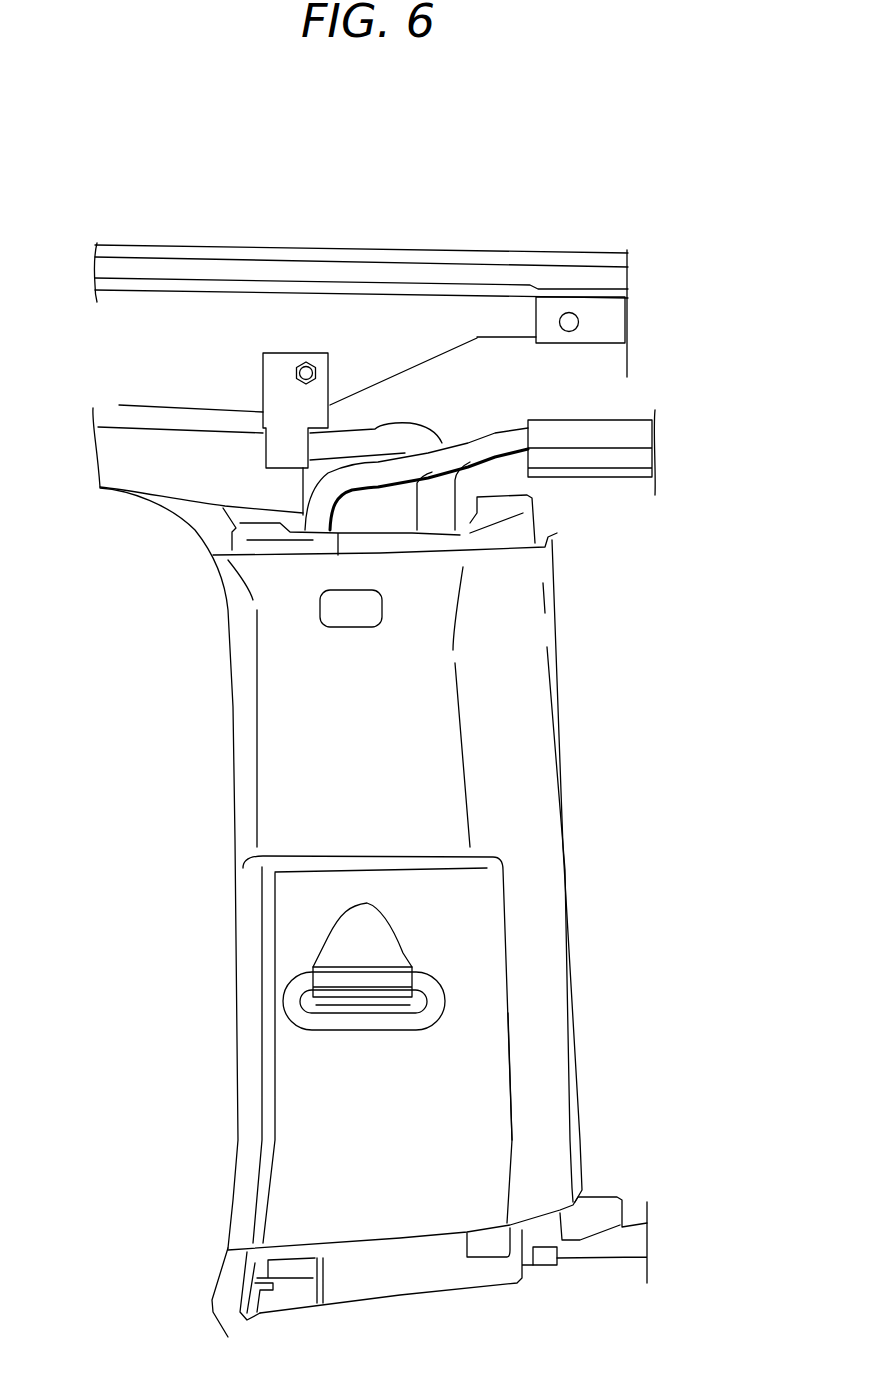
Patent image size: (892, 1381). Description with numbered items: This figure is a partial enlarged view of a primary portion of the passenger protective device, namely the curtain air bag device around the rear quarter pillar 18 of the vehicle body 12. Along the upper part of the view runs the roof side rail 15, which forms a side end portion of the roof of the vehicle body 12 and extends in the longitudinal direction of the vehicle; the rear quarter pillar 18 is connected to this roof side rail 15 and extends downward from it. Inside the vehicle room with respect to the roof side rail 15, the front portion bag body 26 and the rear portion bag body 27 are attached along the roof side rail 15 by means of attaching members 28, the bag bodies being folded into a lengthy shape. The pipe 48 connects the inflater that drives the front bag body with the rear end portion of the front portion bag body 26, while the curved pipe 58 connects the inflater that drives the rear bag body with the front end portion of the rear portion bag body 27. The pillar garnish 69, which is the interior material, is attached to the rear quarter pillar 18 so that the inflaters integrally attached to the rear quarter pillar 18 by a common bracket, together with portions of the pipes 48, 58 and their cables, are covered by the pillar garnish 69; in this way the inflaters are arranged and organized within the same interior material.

The vehicle body 12 is at (361, 272).
The roof side rail 15 is at (196, 245).
The rear quarter pillar 18 is at (228, 1252).
The front portion bag body 26 is at (177, 468).
The rear portion bag body 27 is at (610, 458).
The attaching member 28 is at (282, 372).
The pipe 48 is at (405, 408).
The pipe 58 is at (373, 448).
The pillar garnish 69 is at (407, 770).